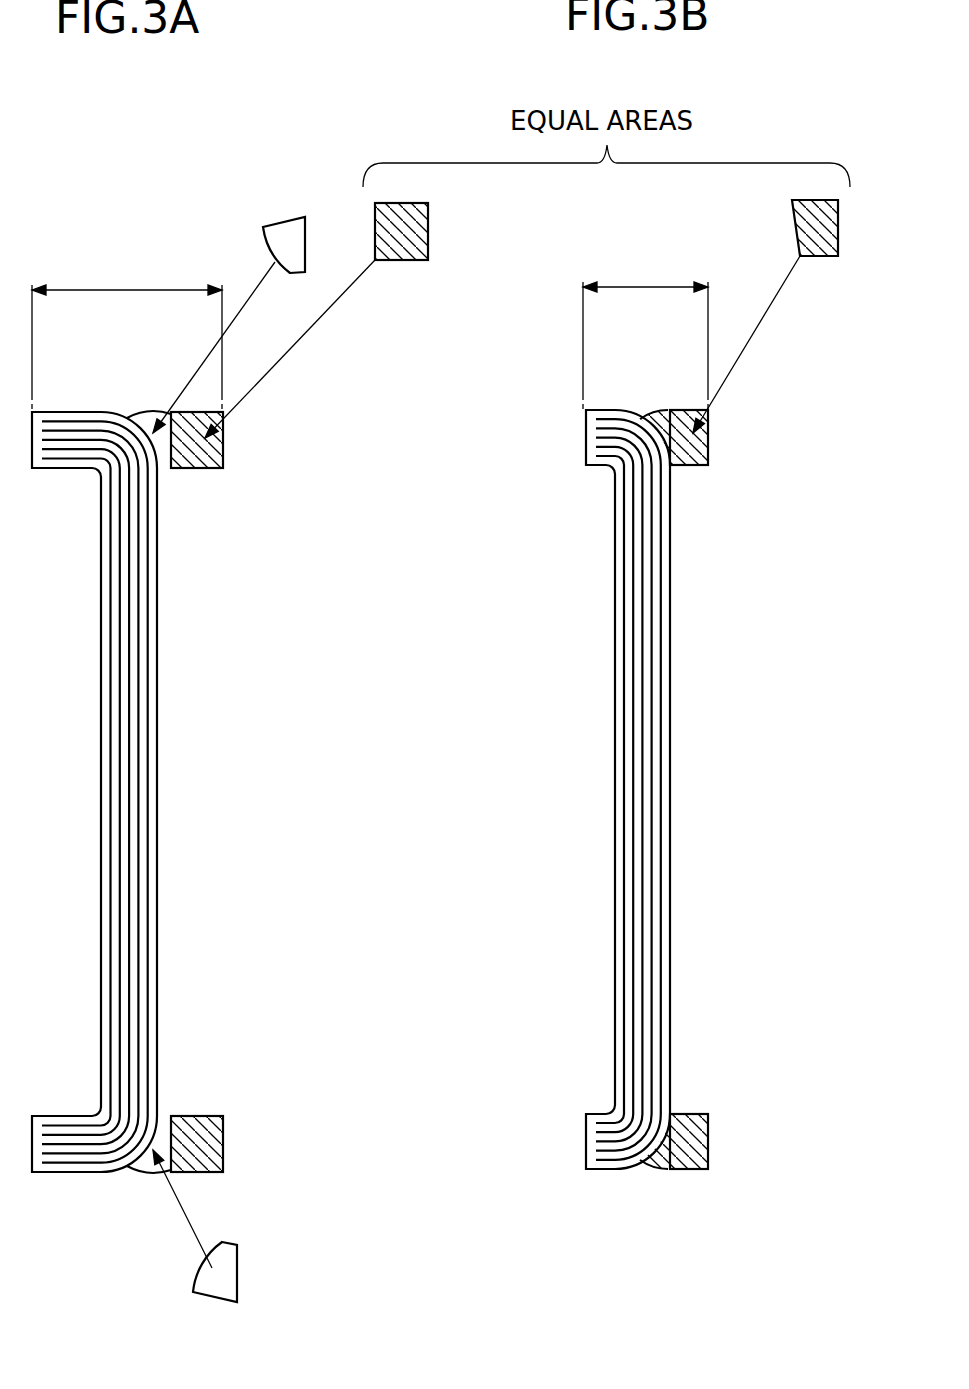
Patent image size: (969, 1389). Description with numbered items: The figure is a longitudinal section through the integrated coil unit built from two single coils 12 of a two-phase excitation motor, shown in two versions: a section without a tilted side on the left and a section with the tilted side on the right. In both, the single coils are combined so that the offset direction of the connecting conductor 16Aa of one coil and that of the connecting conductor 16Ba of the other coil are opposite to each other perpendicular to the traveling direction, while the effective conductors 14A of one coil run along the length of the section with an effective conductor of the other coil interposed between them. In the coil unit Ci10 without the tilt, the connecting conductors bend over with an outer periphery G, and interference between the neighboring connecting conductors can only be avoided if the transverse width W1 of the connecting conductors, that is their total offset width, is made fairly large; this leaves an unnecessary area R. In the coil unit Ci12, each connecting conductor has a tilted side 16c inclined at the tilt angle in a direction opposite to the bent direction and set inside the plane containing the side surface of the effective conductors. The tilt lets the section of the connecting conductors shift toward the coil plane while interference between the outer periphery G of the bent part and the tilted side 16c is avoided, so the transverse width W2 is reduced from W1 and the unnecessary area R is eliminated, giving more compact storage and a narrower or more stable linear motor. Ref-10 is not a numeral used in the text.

In FIG. 3A, the flexible wiring board (conventional) 10 is at (224, 733).
In FIG. 3B, the single coil 12 is at (687, 722).
In FIG. 3A, the effective conductors of single coil 12A 14A is at (142, 770).
In FIG. 3B, the effective conductors of single coil 12A 14A is at (655, 792).
In FIG. 3A, the connecting conductor of single coil 12A 16Aa is at (61, 455).
In FIG. 3B, the connecting conductor of single coil 12A 16Aa is at (598, 450).
In FIG. 3A, the connecting conductor of single coil 12B 16Ba is at (203, 466).
In FIG. 3B, the connecting conductor of single coil 12B 16Ba is at (695, 464).
In FIG. 3B, the tilted side 16c is at (682, 440).
In FIG. 3A, the outer periphery of the bent part G is at (143, 412).
In FIG. 3B, the outer periphery of the bent part G is at (650, 410).
In FIG. 3A, the unnecessary area R is at (293, 232).
In FIG. 3A, the transverse width of the connecting conductors W1 is at (127, 333).
In FIG. 3B, the transverse width of the connecting conductors W2 is at (645, 332).
In FIG. 3A, the coil unit Ci10 is at (268, 442).
In FIG. 3B, the coil unit Ci12 is at (745, 450).